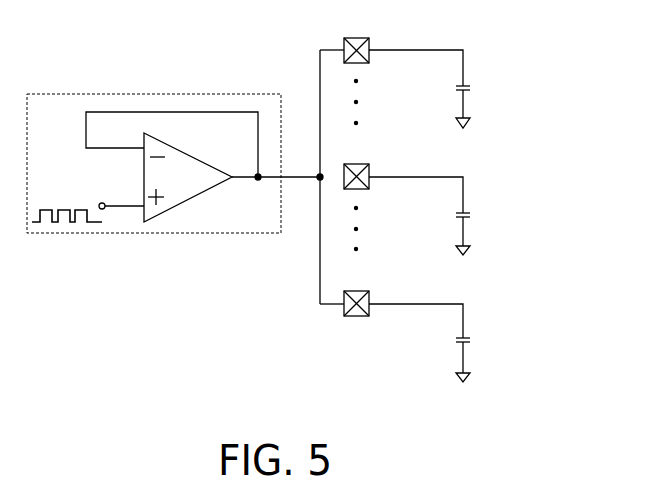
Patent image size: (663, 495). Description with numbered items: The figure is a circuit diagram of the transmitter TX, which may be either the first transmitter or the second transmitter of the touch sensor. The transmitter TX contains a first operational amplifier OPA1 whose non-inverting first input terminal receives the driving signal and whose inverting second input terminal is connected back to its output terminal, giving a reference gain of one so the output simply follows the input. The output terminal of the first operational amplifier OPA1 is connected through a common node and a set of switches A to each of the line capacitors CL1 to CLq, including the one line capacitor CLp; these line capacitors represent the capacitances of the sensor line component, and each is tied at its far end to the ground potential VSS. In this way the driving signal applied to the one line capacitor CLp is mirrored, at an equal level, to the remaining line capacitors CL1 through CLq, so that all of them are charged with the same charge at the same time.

The transmitter TX is at (145, 94).
The first operational amplifier OPA1 is at (203, 167).
The switch A is at (356, 165).
The line capacitor CL1 is at (442, 84).
The line capacitor CLp is at (443, 211).
The line capacitor CLq is at (443, 338).
The ground voltage VSS is at (463, 264).